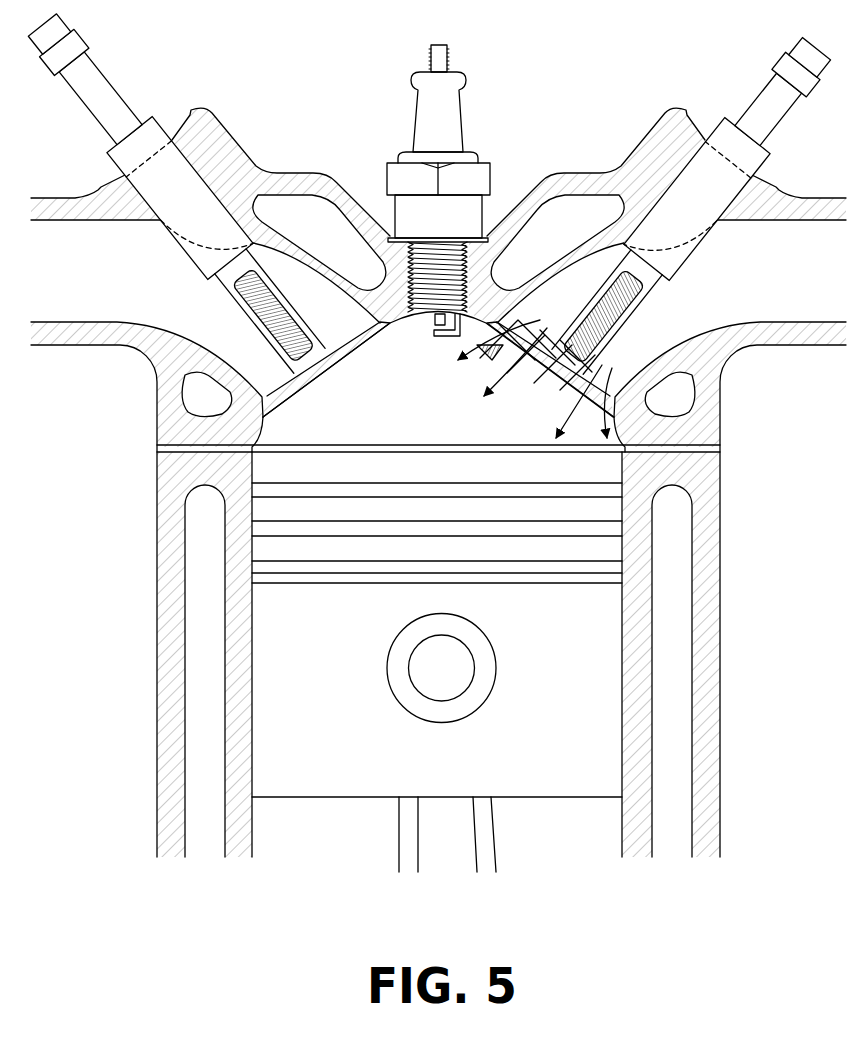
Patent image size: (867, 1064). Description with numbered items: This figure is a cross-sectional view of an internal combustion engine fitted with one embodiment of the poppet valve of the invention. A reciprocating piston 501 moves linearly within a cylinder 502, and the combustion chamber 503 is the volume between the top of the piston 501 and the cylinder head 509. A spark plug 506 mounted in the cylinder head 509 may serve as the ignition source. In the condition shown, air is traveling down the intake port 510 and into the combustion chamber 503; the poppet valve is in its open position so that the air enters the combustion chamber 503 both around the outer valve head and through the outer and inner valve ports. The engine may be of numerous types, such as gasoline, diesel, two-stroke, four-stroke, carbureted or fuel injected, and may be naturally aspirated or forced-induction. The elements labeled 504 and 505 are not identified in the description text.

The piston 501 is at (457, 764).
The cylinder 502 is at (250, 709).
The combustion chamber 503 is at (457, 419).
The fuel injector 504 is at (157, 130).
The injector connector 505 is at (85, 77).
The spark plug 506 is at (421, 74).
The cylinder head 509 is at (343, 283).
The intake port 510 is at (777, 283).